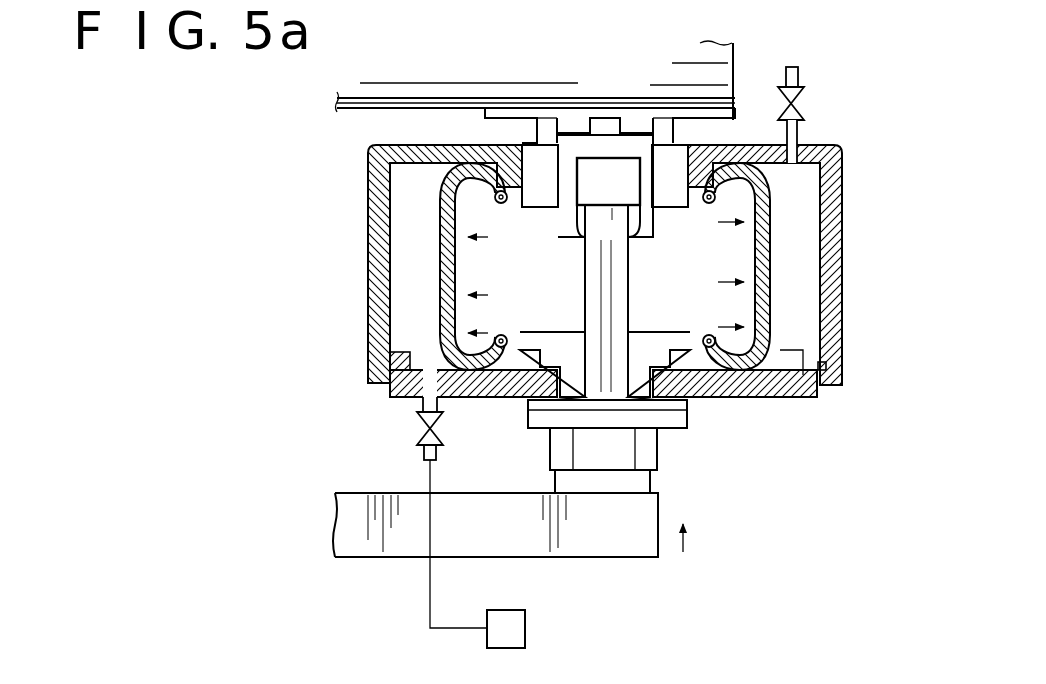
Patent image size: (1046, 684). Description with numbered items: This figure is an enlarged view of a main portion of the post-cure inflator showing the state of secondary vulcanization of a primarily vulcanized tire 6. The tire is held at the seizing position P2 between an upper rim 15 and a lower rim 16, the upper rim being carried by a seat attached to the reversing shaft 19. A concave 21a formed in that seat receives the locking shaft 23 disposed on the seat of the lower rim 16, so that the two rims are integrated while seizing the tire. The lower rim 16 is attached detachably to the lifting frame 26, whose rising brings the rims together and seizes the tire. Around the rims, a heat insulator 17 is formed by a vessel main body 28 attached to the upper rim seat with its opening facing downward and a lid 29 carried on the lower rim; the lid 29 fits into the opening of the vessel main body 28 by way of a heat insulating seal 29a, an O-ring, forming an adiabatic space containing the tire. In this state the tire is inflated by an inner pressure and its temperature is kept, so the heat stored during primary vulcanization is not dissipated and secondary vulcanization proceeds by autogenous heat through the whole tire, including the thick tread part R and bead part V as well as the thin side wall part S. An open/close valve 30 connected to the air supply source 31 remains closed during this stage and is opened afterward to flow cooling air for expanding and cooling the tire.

The reversing shaft 19 is at (340, 80).
The concave 21a is at (597, 162).
The open/close valve 30 is at (420, 438).
The heat insulator 17 is at (639, 265).
The vessel main body 28 is at (830, 268).
The heat insulating seal 29a is at (828, 367).
The lid 29 is at (767, 380).
The upper rim 15 is at (702, 204).
The lower rim 16 is at (697, 352).
The primarily vulcanized tire 6 is at (436, 297).
The locking shaft 23 is at (590, 280).
The lifting frame 26 is at (585, 548).
The air supply source 31 is at (526, 630).
The tread part R is at (440, 240).
The seizing position P2 is at (694, 297).
The side wall part S is at (490, 360).
The bead part V is at (514, 365).